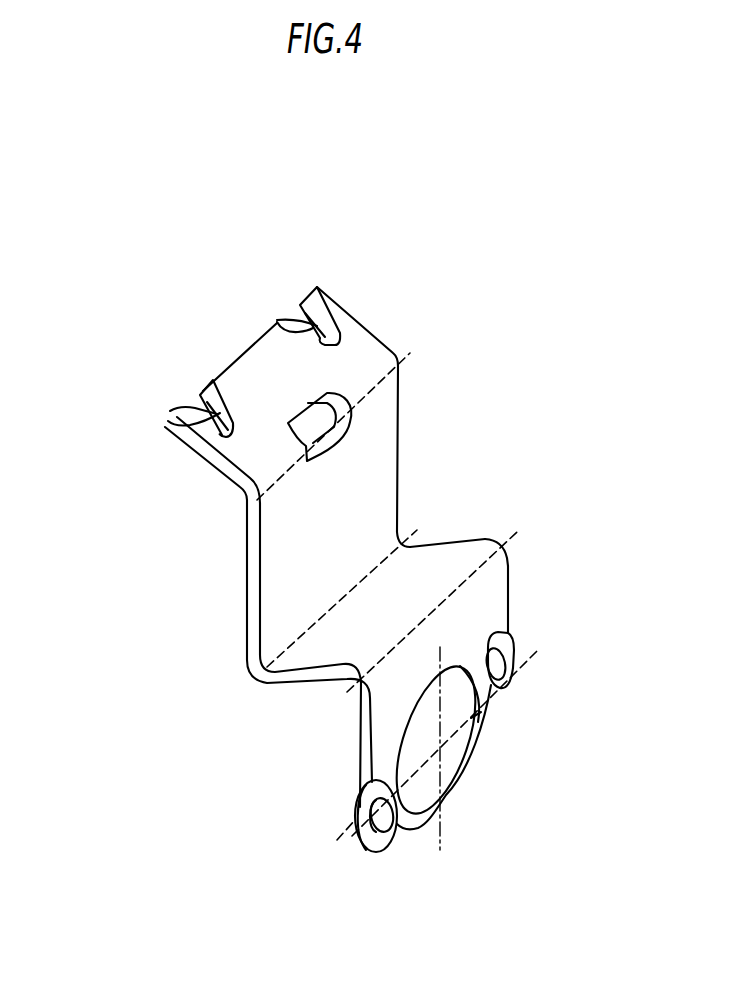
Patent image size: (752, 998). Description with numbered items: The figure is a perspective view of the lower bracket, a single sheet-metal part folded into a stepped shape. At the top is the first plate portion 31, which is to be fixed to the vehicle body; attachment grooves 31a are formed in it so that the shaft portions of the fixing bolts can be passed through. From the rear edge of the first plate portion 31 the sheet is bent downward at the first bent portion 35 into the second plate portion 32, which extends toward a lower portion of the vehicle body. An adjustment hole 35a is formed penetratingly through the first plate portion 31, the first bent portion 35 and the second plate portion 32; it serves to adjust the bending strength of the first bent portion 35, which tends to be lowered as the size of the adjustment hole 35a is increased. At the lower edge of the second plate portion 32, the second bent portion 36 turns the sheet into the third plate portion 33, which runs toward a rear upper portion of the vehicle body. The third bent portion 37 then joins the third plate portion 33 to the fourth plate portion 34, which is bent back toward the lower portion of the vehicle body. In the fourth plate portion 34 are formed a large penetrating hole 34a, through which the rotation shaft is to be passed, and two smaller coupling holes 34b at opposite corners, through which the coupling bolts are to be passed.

The first plate portion 31 is at (352, 357).
The attachment grooves 31a is at (278, 322).
The second plate portion 32 is at (360, 485).
The third plate portion 33 is at (447, 563).
The fourth plate portion 34 is at (493, 595).
The penetrating hole 34a is at (453, 733).
The coupling holes 34b is at (512, 635).
The first bent portion 35 is at (243, 490).
The adjustment hole 35a is at (327, 440).
The second bent portion 36 is at (257, 675).
The third bent portion 37 is at (507, 553).